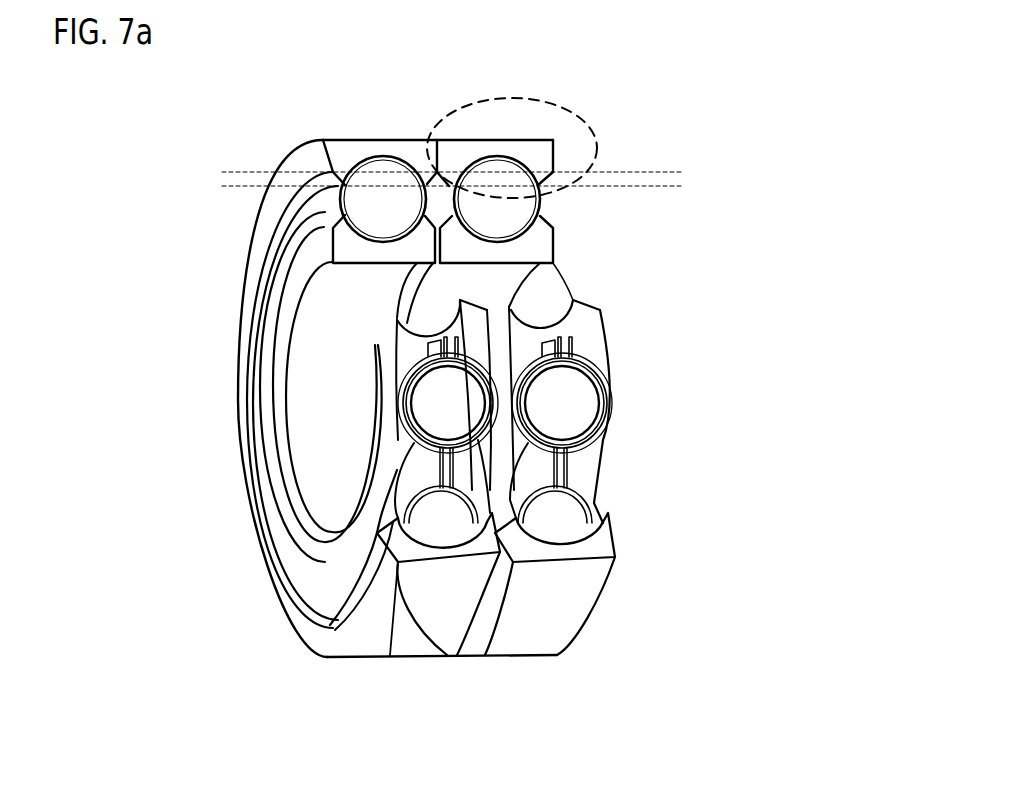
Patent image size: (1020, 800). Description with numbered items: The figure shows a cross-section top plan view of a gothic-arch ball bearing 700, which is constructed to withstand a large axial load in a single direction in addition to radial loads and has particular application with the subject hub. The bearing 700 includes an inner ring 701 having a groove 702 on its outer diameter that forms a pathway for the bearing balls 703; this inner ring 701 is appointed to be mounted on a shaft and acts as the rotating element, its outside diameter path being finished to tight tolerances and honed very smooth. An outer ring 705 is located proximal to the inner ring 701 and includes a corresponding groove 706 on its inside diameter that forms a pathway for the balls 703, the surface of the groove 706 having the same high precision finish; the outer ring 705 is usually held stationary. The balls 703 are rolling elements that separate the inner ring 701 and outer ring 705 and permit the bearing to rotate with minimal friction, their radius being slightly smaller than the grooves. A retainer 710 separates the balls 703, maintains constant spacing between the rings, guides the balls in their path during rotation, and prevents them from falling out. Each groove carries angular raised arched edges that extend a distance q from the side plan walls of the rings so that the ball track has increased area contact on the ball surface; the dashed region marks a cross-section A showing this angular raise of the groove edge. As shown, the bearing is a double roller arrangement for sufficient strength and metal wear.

The gothic-arch ball bearing 700 is at (170, 158).
The inner ring 701 is at (327, 527).
The groove 702 is at (407, 347).
The bearing ball 703 is at (553, 203).
The outer ring 705 is at (333, 635).
The groove 706 is at (430, 553).
The retainer 710 is at (563, 473).
The cross-section A is at (545, 100).
The distance q is at (673, 180).